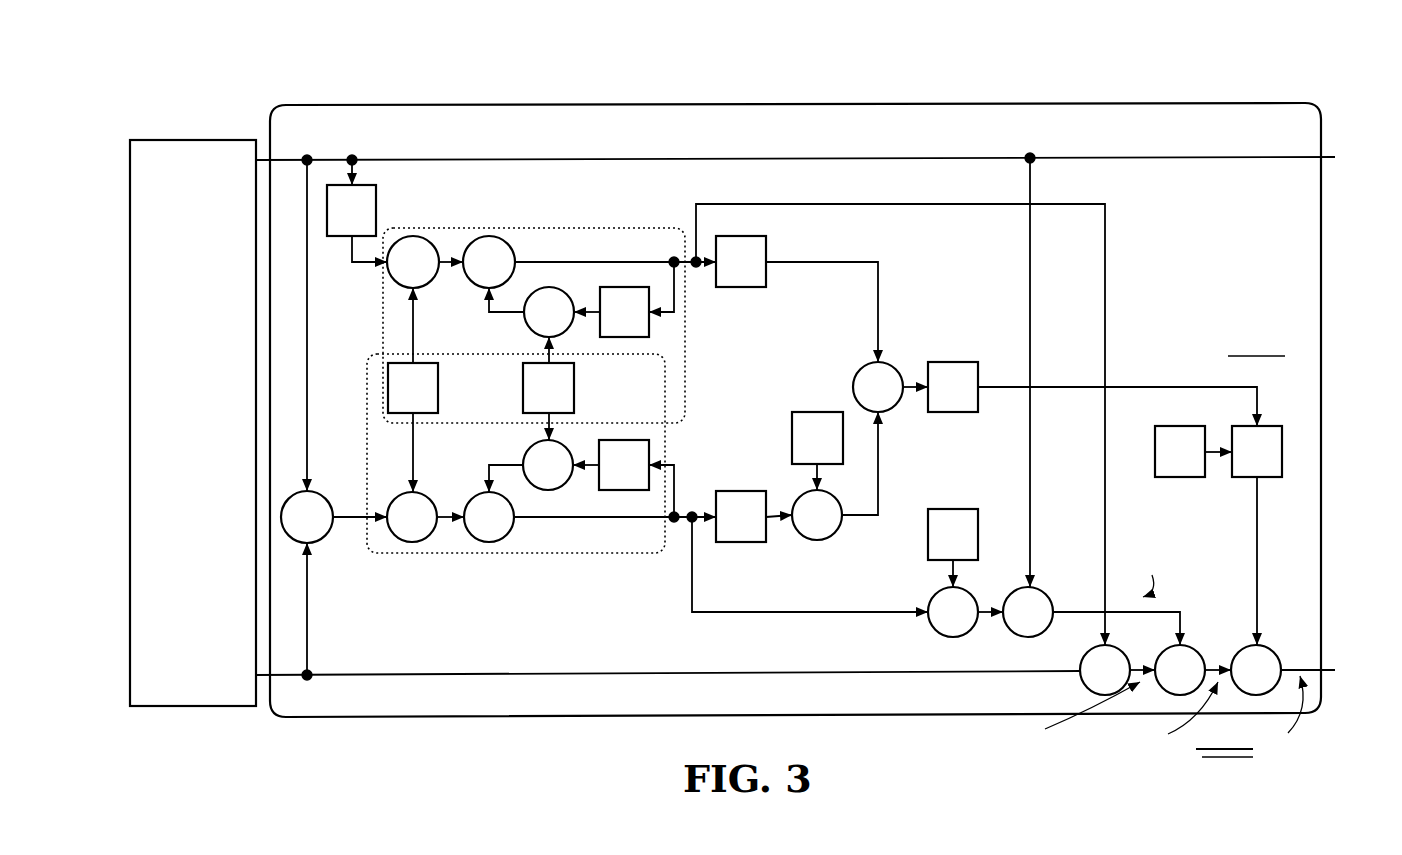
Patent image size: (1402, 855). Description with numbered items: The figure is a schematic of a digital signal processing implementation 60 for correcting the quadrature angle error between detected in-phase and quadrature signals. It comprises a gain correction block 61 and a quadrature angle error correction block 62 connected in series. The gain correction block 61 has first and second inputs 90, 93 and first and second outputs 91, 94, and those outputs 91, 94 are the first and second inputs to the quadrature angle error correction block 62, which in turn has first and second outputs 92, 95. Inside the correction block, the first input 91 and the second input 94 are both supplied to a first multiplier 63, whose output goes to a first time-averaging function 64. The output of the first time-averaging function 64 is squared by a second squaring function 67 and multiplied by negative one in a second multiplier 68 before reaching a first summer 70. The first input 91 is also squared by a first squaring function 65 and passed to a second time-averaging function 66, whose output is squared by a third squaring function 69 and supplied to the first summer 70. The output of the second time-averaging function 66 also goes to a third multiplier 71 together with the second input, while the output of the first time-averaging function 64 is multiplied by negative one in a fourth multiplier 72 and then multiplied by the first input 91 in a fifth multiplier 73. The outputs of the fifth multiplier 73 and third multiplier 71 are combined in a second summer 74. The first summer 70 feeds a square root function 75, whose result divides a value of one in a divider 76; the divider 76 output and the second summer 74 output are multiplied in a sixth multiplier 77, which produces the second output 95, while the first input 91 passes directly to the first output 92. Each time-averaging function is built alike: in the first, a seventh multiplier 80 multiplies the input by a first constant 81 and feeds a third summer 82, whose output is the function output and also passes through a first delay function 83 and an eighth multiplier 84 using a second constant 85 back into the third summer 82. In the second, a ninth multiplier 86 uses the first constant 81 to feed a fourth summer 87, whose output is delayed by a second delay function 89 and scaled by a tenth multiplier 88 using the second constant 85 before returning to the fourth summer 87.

The digital signal processing implementation 60 is at (523, 68).
The gain correction block 61 is at (192, 140).
The quadrature angle error correction block 62 is at (835, 103).
The first multiplier 63 is at (323, 496).
The first time-averaging function 64 is at (567, 555).
The first squaring function 65 is at (376, 211).
The second time-averaging function 66 is at (613, 226).
The second squaring function 67 is at (748, 491).
The second multiplier 68 is at (832, 537).
The third squaring function 69 is at (748, 287).
The first summer 70 is at (857, 378).
The third multiplier 71 is at (1083, 658).
The fourth multiplier 72 is at (935, 630).
The fifth multiplier 73 is at (1010, 630).
The second summer 74 is at (1165, 651).
The square root function 75 is at (963, 362).
The divider 76 is at (1272, 426).
The sixth multiplier 77 is at (1240, 650).
The seventh multiplier 80 is at (430, 498).
The first constant 81 is at (438, 400).
The third summer 82 is at (478, 541).
The first delay function 83 is at (640, 440).
The eighth multiplier 84 is at (526, 454).
The second constant 85 is at (523, 375).
The ninth multiplier 86 is at (395, 284).
The fourth summer 87 is at (480, 238).
The tenth multiplier 88 is at (527, 320).
The second delay function 89 is at (618, 287).
The first input 90 is at (130, 160).
The first output 91 is at (263, 140).
The first output 92 is at (1350, 173).
The second input 93 is at (130, 675).
The second output 94 is at (261, 698).
The second output 95 is at (1300, 678).